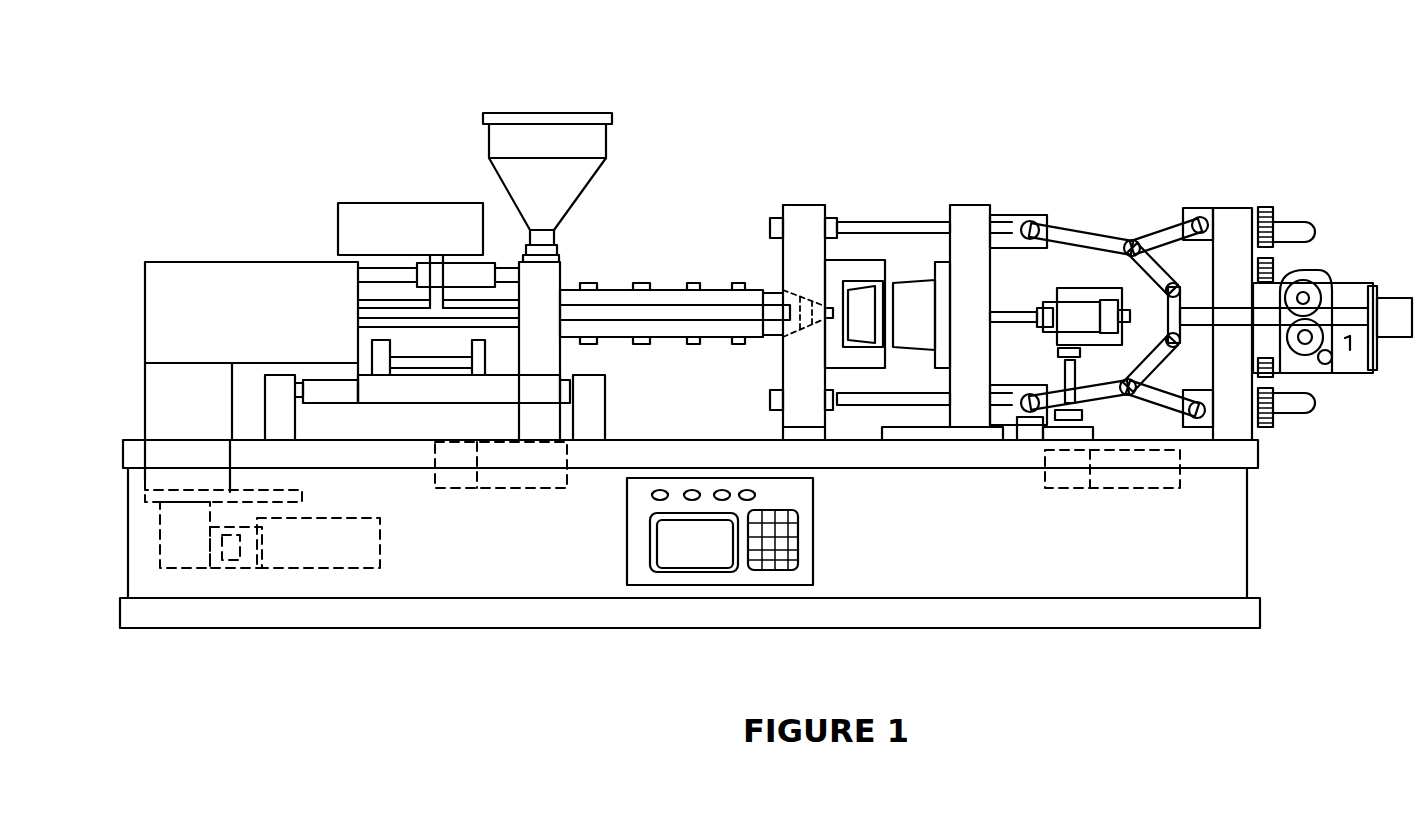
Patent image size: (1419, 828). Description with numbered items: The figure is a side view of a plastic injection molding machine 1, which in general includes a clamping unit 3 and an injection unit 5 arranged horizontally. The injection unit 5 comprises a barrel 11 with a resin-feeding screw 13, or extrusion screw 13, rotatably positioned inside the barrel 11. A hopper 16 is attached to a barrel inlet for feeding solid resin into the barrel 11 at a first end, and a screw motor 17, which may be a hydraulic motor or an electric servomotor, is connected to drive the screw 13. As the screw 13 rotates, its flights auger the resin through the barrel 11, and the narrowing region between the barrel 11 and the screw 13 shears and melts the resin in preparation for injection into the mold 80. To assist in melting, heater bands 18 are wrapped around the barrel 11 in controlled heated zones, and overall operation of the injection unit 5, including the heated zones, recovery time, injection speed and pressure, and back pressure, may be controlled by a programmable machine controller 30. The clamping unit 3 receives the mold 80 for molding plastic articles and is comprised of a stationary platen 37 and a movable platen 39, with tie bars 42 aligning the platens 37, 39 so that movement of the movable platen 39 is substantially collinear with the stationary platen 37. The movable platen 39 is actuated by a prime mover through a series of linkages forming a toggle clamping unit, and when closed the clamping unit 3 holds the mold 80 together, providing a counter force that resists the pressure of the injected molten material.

The plastic injection molding machine 1 is at (846, 80).
The clamping unit 3 is at (1091, 297).
The injection unit 5 is at (489, 240).
The barrel 11 is at (605, 297).
The resin-feeding screw 13 is at (662, 313).
The hopper 16 is at (577, 138).
The screw motor 17 is at (261, 222).
The heater bands 18 is at (737, 286).
The machine controller 30 is at (642, 567).
The stationary platen 37 is at (802, 223).
The movable platen 39 is at (965, 223).
The tie bars 42 is at (866, 402).
The mold 80 is at (840, 273).